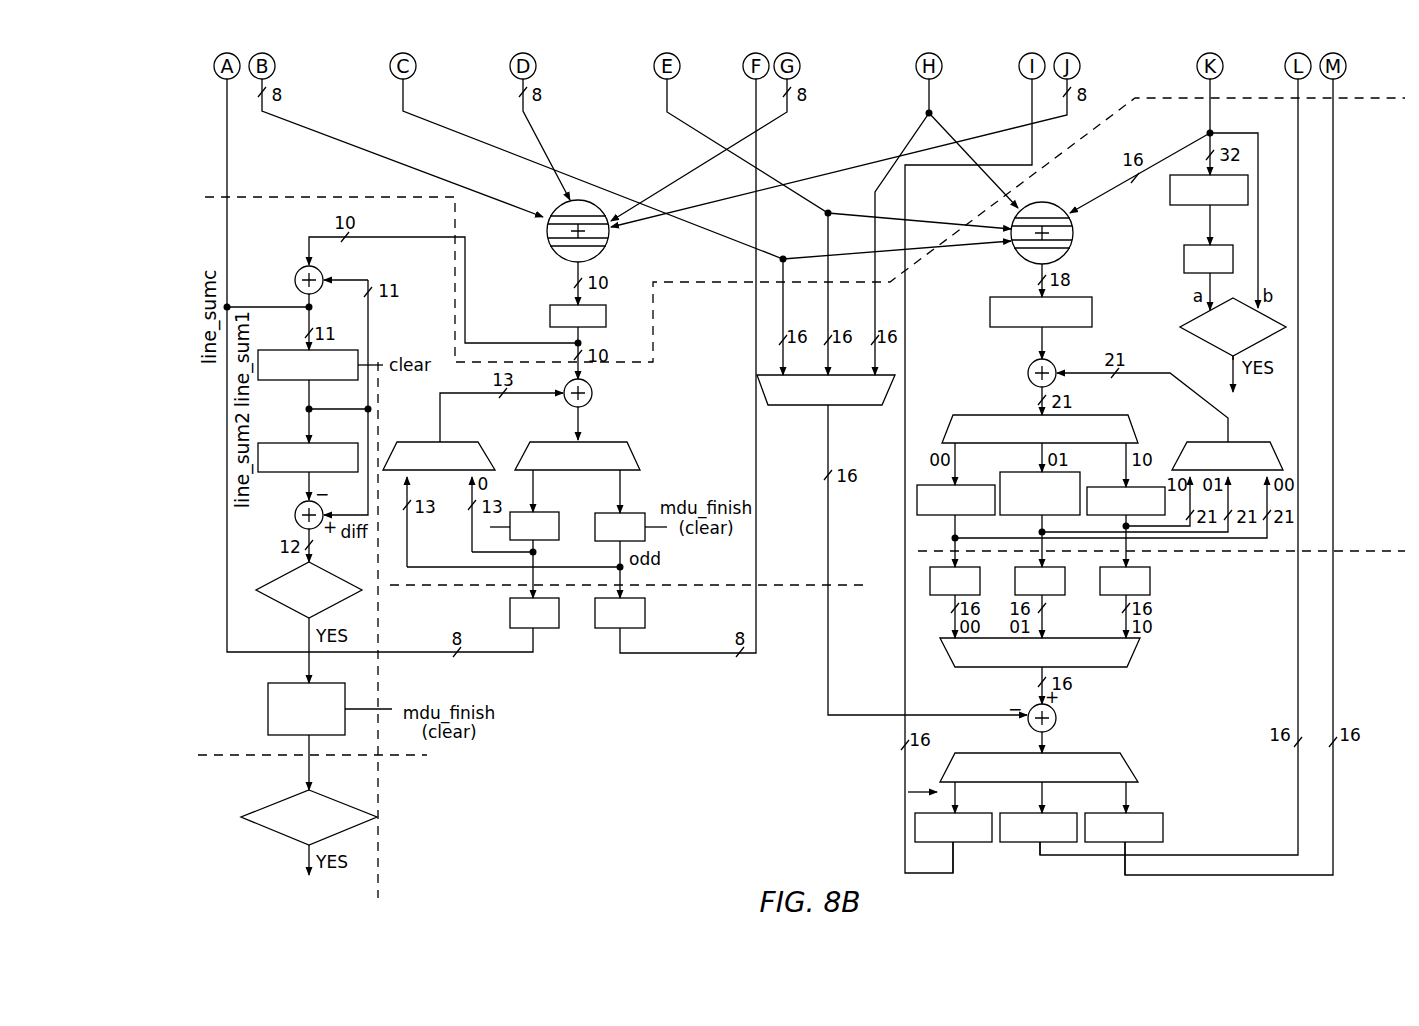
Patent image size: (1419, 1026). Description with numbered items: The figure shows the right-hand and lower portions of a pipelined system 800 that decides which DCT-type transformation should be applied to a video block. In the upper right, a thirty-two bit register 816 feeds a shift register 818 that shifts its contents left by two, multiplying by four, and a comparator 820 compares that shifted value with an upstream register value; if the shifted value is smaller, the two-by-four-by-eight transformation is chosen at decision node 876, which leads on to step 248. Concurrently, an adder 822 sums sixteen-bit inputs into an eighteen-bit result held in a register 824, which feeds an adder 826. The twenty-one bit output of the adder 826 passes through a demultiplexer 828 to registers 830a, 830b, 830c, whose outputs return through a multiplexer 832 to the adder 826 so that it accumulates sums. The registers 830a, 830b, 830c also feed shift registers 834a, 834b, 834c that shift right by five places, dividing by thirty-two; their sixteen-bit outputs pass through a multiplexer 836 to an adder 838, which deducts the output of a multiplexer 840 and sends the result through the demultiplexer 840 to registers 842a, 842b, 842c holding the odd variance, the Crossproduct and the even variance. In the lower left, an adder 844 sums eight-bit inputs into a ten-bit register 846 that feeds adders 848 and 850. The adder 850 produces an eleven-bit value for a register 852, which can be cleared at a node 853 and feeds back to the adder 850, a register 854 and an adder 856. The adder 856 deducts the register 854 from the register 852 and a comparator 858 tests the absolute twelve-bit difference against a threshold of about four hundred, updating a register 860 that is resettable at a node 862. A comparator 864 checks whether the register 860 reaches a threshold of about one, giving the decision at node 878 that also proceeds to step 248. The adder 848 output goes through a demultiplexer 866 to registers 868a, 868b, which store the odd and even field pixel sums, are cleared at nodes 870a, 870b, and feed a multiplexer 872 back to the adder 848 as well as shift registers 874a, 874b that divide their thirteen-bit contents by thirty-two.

The pipelined system 800 is at (1342, 196).
The register 816 is at (1195, 207).
The shift register 818 is at (1184, 259).
The comparator 820 is at (1196, 313).
The adder 822 is at (1040, 204).
The register 824 is at (1072, 298).
The adder 826 is at (1028, 370).
The demultiplexer 828 is at (1072, 414).
The register 830a is at (1145, 487).
The register 830b is at (1028, 472).
The register 830c is at (935, 485).
The multiplexer 832 is at (1238, 440).
The shift register 834a is at (1152, 580).
The shift register 834b is at (1067, 580).
The shift register 834c is at (933, 585).
The multiplexer 836 is at (1137, 652).
The adder 838 is at (1057, 713).
The multiplexer / demultiplexer 840 is at (803, 407).
The register 842a is at (1163, 830).
The register 842b is at (1025, 846).
The register 842c is at (963, 812).
The adder 844 is at (610, 238).
The register 846 is at (550, 305).
The adder 848 is at (593, 392).
The adder 850 is at (297, 276).
The register 852 is at (334, 350).
The node 853 is at (380, 365).
The register 854 is at (283, 474).
The adder 856 is at (318, 531).
The comparator 858 is at (292, 613).
The register 860 is at (291, 683).
The node 862 is at (387, 709).
The comparator 864 is at (298, 791).
The demultiplexer 866 is at (605, 441).
The register 868a is at (632, 512).
The register 868b is at (553, 512).
The node 870a is at (667, 527).
The node 870b is at (490, 527).
The multiplexer 872 is at (455, 441).
The shift register 874a is at (648, 613).
The shift register 874b is at (545, 630).
The node 876 is at (1232, 372).
The node 878 is at (306, 856).
The step 248 of flow 248 is at (806, 628).